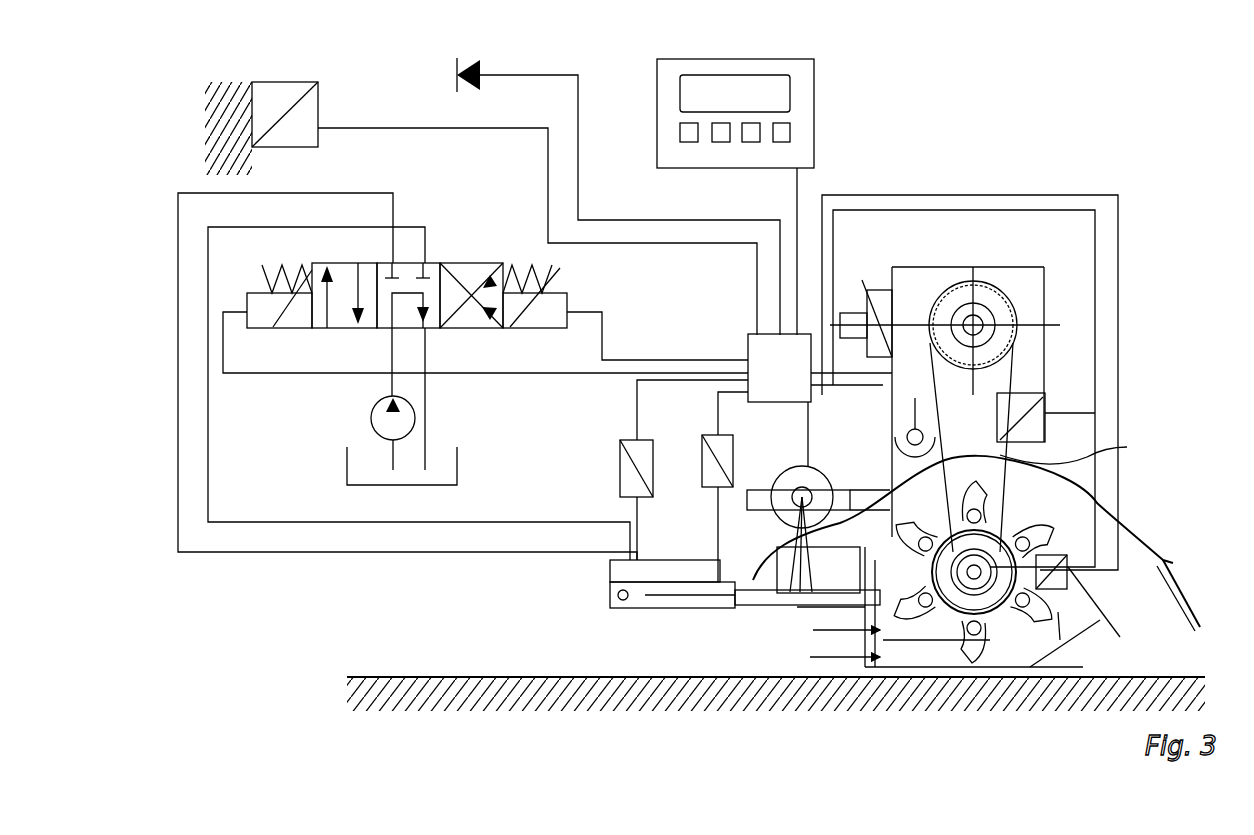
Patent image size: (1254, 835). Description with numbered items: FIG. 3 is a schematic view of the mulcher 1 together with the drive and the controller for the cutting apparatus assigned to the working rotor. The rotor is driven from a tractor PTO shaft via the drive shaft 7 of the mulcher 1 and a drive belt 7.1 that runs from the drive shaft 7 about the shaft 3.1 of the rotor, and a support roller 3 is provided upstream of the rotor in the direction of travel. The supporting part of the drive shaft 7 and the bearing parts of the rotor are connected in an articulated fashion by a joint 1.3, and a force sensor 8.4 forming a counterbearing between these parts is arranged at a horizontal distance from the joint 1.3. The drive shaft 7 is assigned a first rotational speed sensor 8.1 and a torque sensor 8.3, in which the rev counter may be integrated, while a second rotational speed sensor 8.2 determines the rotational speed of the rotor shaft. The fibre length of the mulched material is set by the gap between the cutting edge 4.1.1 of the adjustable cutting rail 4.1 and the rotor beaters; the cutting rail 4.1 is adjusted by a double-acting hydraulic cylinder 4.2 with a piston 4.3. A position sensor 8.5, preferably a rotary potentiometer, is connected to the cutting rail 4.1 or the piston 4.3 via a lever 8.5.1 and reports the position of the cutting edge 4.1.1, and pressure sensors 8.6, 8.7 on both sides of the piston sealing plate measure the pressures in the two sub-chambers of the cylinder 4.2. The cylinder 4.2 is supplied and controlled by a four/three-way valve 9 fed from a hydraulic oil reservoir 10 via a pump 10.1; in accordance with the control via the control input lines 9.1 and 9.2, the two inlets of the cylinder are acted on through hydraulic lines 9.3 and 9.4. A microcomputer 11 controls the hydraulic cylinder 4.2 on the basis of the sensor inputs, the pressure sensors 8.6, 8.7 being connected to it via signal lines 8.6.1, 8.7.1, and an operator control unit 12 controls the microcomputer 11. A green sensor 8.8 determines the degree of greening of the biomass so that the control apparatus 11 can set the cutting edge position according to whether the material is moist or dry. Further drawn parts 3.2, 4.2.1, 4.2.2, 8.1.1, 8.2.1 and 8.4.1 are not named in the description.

The mulcher 1 is at (1152, 398).
The joint 1.3 is at (905, 430).
The support roller 3 is at (1010, 742).
The shaft 3.1 is at (1015, 580).
The drum support 3.2 is at (1060, 640).
The cutting rail 4.1 is at (797, 607).
The cutting edge 4.1.1 is at (868, 655).
The hydraulic cylinder 4.2 is at (668, 596).
The cylinder housing 4.2.1 is at (630, 573).
The piston rod 4.2.2 is at (716, 598).
The piston 4.3 is at (760, 606).
The drive shaft 7 is at (990, 327).
The drive belt 7.1 is at (1047, 447).
The first rotational speed sensor 8.1 is at (872, 300).
The motor control line 8.1.1 is at (858, 388).
The second rotational speed sensor 8.2 is at (1100, 622).
The housing 8.2.1 is at (1052, 195).
The torque sensor 8.3 is at (872, 292).
The force sensor 8.4 is at (1045, 417).
The sensor housing 8.4.1 is at (1006, 210).
The position sensor 8.5 is at (812, 470).
The lever 8.5.1 is at (808, 426).
The pressure sensor 8.6 is at (620, 460).
The signal line 8.6.1 is at (637, 410).
The pressure sensor 8.7 is at (733, 456).
The signal line 8.7.1 is at (718, 410).
The green sensor 8.8 is at (285, 92).
The 4/3-way valve 9 is at (472, 242).
The control input line 9.1 is at (243, 378).
The control input line 9.2 is at (500, 378).
The hydraulic line 9.3 is at (178, 220).
The hydraulic line 9.4 is at (208, 307).
The hydraulic oil reservoir 10 is at (347, 466).
The pump 10.1 is at (382, 416).
The microcomputer 11 is at (748, 350).
The operator control unit 12 is at (815, 106).